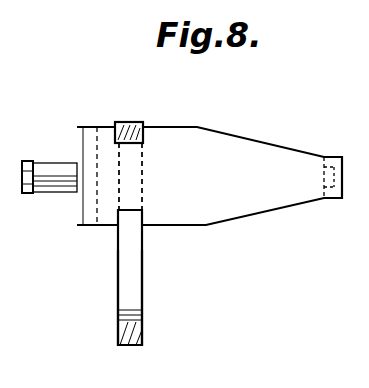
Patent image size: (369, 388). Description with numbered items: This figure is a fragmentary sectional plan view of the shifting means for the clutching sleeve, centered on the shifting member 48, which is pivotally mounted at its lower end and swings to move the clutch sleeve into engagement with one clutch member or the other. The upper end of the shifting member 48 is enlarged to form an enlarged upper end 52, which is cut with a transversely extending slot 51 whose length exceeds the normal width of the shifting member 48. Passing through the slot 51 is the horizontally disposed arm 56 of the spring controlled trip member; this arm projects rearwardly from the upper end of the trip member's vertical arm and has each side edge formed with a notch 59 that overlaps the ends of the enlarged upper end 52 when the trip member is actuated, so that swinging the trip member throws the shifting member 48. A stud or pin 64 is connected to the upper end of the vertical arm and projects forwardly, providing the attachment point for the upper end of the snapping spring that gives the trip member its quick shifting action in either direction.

The shifting member 48 is at (118, 284).
The transversely extending slot 51 is at (130, 262).
The enlarged upper end 52 is at (130, 122).
The horizontally disposed arm 56 is at (233, 162).
The notch 59 is at (135, 208).
The stud or pin 64 is at (47, 170).